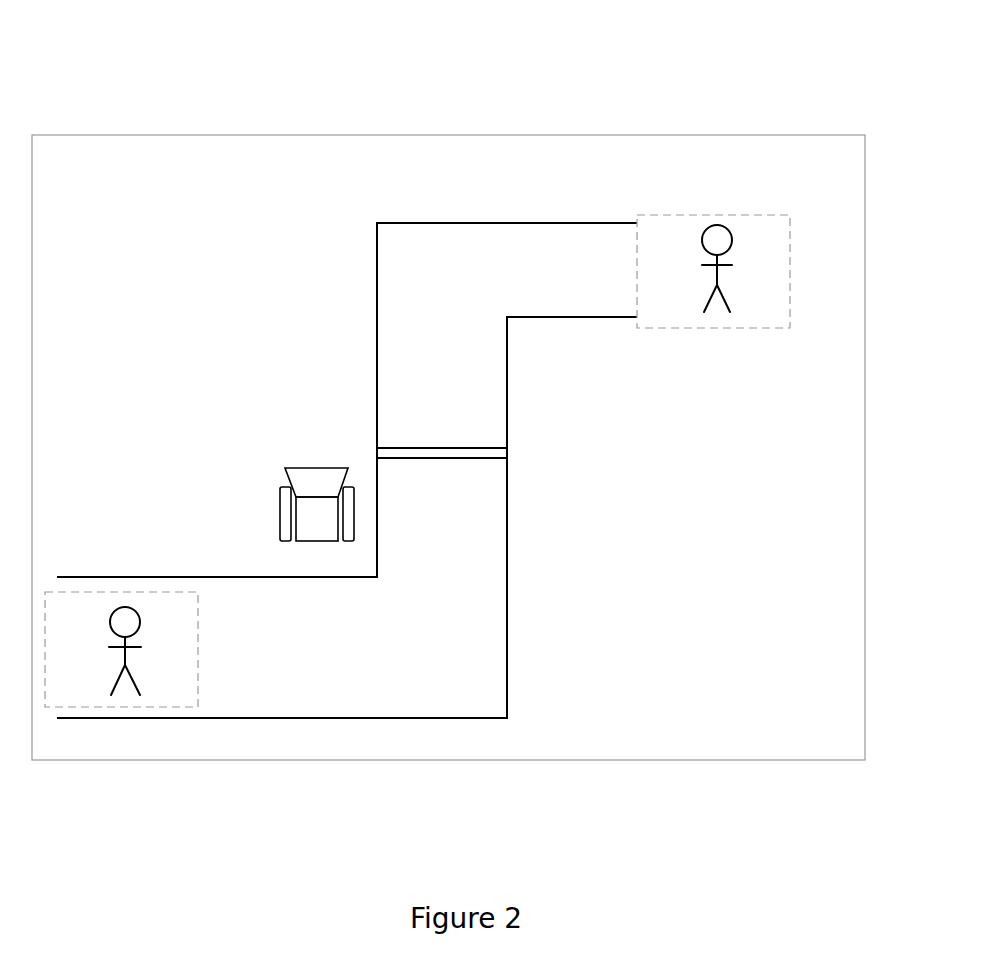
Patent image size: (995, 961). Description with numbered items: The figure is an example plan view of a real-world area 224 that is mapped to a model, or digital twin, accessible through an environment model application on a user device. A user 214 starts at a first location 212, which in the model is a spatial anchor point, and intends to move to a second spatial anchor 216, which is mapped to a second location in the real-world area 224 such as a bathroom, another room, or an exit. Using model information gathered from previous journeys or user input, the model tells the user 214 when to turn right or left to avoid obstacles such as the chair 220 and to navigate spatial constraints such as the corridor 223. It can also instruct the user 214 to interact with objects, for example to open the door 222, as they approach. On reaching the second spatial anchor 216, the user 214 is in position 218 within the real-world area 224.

The first location 212 is at (138, 705).
The user 214 is at (123, 604).
The second spatial anchor 216 is at (742, 328).
The position 218 is at (712, 223).
The chair 220 is at (311, 467).
The door 222 is at (447, 448).
The corridor 223 is at (405, 718).
The real-world area 224 is at (106, 136).